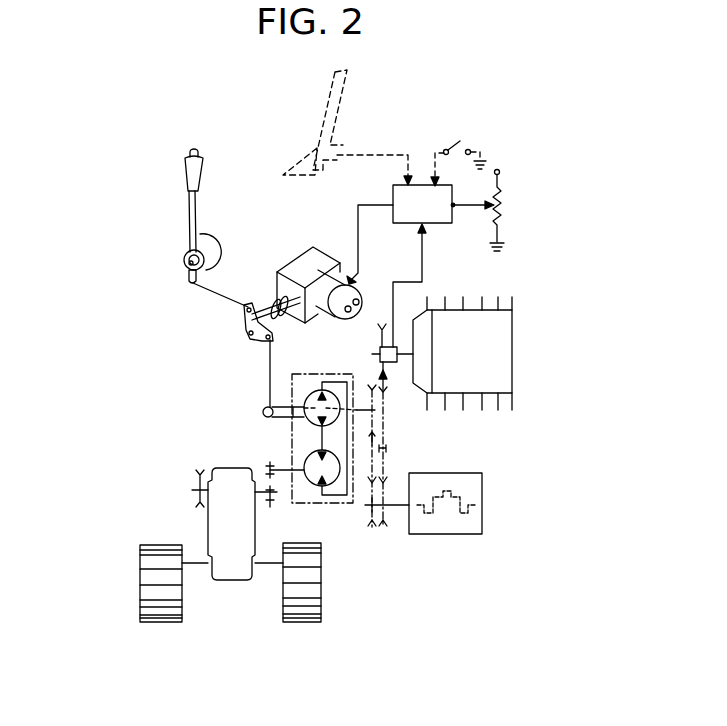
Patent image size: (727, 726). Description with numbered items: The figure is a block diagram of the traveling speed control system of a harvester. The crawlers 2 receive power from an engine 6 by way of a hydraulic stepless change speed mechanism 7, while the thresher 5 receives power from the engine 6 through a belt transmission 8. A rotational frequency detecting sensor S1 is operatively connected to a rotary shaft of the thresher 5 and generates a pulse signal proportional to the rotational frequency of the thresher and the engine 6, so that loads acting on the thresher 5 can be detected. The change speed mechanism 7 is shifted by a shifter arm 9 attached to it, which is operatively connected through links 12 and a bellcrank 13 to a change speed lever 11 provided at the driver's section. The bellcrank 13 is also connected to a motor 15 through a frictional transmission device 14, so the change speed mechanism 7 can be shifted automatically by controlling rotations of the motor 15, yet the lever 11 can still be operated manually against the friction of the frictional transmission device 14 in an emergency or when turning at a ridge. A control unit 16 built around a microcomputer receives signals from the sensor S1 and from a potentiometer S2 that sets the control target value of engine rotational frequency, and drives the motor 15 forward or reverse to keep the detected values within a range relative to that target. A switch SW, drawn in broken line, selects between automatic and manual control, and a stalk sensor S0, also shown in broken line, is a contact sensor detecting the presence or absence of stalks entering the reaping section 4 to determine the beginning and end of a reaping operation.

The crawlers 2 is at (160, 545).
The reaping section 4 is at (320, 104).
The thresher 5 is at (475, 290).
The engine 6 is at (450, 535).
The hydraulic stepless change speed mechanism 7 is at (338, 508).
The belt transmission 8 is at (400, 450).
The shifter arm 9 is at (281, 418).
The change speed lever 11 is at (205, 175).
The links 12 is at (213, 295).
The bellcrank 13 is at (241, 328).
The frictional transmission device 14 is at (272, 292).
The motor 15 is at (337, 315).
The control unit 16 is at (399, 250).
The stalk sensor S0 is at (342, 158).
The rotational frequency detecting sensor S1 is at (395, 363).
The potentiometer S2 is at (492, 211).
The switch SW is at (467, 145).